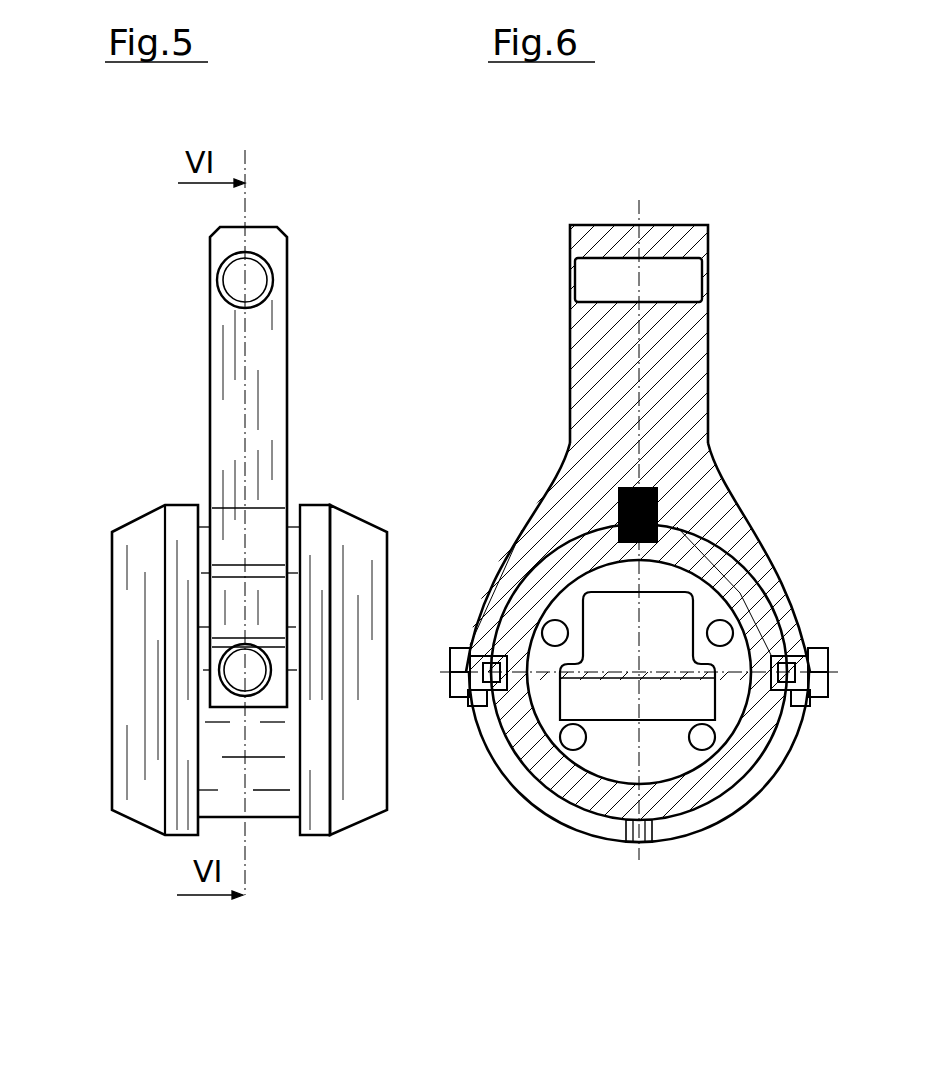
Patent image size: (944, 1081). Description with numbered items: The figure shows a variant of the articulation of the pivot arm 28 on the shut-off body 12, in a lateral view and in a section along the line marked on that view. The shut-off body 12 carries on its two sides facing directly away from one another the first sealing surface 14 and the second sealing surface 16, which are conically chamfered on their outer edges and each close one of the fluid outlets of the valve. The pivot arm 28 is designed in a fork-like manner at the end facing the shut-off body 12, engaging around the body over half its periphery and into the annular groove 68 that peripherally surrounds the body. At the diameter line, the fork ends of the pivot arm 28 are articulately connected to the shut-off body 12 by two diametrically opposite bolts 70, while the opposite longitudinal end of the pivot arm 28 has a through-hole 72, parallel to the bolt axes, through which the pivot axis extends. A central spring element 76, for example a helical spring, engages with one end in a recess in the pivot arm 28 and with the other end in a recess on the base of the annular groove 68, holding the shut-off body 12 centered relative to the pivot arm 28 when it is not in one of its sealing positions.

In FIG. 5, the shut-off body 12 is at (305, 515).
In FIG. 6, the shut-off body 12 is at (733, 580).
In FIG. 5, the first sealing surface 14 is at (396, 548).
In FIG. 5, the second sealing surface 16 is at (104, 582).
In FIG. 5, the pivot arm 28 is at (272, 345).
In FIG. 6, the pivot arm 28 is at (670, 350).
In FIG. 5, the annular groove 68 is at (260, 827).
In FIG. 6, the annular groove 68 is at (748, 777).
In FIG. 5, the bolts 70 is at (260, 667).
In FIG. 6, the bolts 70 is at (808, 660).
In FIG. 5, the through-hole 72 is at (258, 292).
In FIG. 6, the through-hole 72 is at (690, 295).
In FIG. 6, the central spring element 76 is at (655, 492).